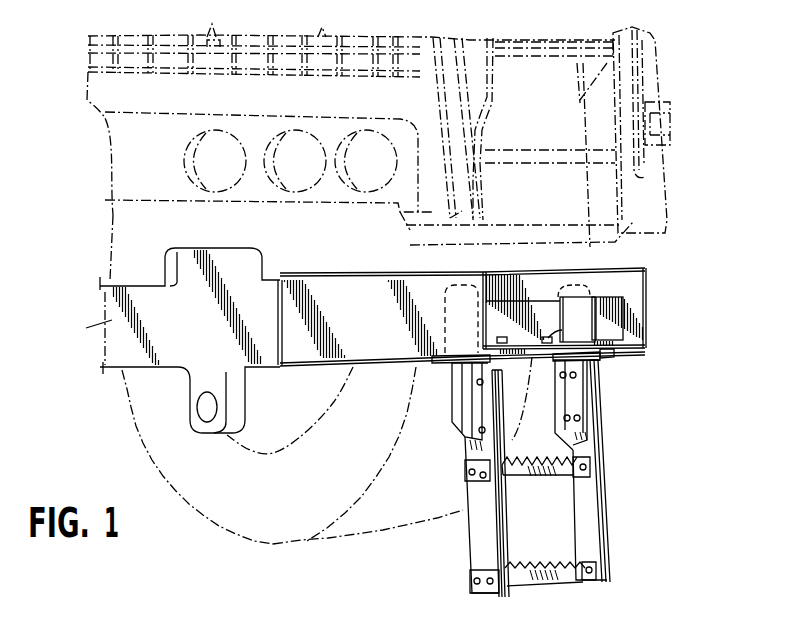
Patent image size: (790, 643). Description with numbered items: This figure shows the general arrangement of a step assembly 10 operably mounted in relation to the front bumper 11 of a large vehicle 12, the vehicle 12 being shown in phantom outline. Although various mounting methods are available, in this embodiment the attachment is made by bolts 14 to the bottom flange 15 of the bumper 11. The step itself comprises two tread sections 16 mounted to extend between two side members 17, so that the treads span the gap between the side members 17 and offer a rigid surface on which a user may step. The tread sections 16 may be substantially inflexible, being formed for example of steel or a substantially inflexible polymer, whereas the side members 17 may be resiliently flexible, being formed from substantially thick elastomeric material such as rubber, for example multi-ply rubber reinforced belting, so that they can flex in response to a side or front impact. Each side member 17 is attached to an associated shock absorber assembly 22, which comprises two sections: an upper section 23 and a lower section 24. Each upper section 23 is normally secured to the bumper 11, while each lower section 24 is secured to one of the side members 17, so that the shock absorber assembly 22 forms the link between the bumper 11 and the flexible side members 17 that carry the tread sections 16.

The step assembly 10 is at (410, 422).
The front bumper 11 is at (602, 309).
The vehicle 12 is at (132, 158).
The bolts 14 is at (597, 318).
The bottom flange 15 is at (385, 364).
The tread sections 16 is at (601, 493).
The side members 17 is at (608, 556).
The shock absorber assembly 22 is at (604, 358).
The upper section 23 is at (583, 315).
The lower section 24 is at (452, 400).